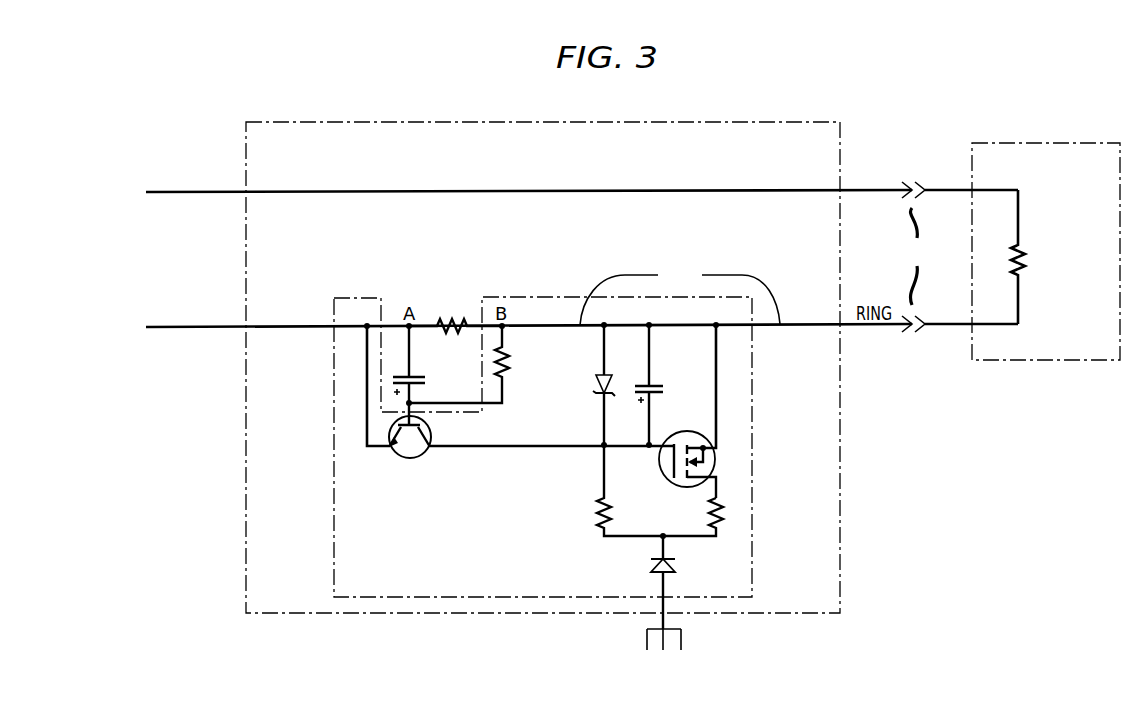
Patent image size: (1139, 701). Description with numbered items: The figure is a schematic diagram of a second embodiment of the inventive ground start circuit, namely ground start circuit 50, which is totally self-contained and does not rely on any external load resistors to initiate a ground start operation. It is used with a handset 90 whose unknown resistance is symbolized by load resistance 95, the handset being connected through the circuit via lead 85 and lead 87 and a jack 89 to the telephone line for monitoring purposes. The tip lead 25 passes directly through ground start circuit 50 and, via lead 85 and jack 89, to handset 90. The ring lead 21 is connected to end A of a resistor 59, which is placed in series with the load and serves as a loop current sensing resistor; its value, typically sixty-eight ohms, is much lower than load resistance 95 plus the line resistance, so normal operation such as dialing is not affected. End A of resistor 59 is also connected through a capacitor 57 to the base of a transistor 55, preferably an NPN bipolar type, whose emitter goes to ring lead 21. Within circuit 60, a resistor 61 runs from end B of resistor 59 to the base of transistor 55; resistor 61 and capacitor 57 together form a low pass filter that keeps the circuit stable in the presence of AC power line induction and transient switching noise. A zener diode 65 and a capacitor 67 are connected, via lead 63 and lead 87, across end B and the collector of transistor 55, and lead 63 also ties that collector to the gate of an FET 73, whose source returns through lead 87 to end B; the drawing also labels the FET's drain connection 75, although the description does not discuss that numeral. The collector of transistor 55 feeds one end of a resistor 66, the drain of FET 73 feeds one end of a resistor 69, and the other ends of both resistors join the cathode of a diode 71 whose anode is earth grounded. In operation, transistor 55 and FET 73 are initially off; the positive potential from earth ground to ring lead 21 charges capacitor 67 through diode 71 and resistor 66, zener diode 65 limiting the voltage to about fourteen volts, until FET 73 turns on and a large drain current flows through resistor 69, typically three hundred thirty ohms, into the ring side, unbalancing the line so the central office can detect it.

The ground start circuit 50 is at (292, 122).
The tip lead 25 is at (163, 190).
The ring lead 21 is at (163, 325).
The circuit 60 is at (352, 297).
The resistor 59 is at (449, 321).
The capacitor 57 is at (420, 380).
The resistor 61 is at (511, 361).
The transistor 55 is at (410, 458).
The lead 63 is at (543, 446).
The zener diode 65 is at (603, 377).
The capacitor 67 is at (660, 386).
The drain lead 75 is at (715, 414).
The FET 73 is at (659, 466).
The resistor 66 is at (602, 510).
The resistor 69 is at (715, 510).
The diode 71 is at (676, 563).
The lead 87 is at (681, 321).
The lead 85 is at (859, 193).
The jack 89 is at (919, 256).
The handset 90 is at (1100, 143).
The load resistance 95 is at (1028, 259).